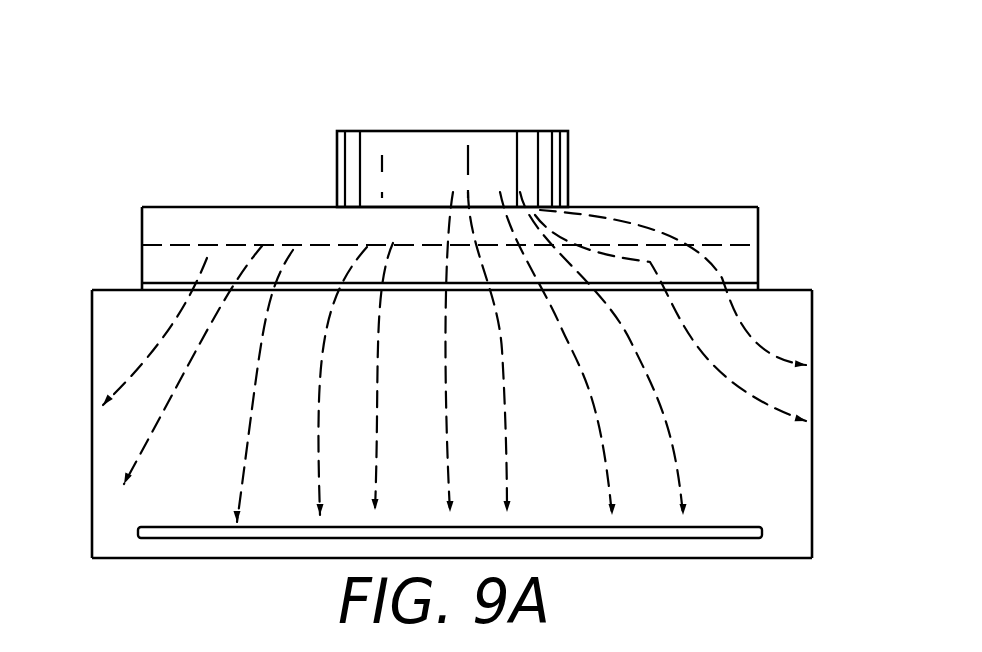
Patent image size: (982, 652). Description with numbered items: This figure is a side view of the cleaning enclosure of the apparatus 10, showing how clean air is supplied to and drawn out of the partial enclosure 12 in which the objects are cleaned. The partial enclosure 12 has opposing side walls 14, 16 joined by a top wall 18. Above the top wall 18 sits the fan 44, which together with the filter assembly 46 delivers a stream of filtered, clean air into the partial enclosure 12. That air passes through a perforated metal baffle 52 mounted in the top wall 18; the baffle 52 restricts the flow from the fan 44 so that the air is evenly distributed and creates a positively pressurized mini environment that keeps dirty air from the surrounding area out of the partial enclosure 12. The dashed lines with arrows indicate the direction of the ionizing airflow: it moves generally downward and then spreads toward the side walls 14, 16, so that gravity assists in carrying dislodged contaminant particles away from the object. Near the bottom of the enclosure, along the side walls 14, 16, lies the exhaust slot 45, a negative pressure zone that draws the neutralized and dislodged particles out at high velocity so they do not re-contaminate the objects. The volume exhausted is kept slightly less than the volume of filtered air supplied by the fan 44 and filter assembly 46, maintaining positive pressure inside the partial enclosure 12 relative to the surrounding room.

The apparatus 10 is at (303, 134).
The partial enclosure 12 is at (777, 277).
The side wall 14 is at (92, 373).
The side wall 16 is at (812, 345).
The top wall 18 is at (204, 292).
The fan 44 is at (568, 160).
The exhaust slot 45 is at (740, 527).
The filter assembly 46 is at (213, 206).
The perforated metal baffle 52 is at (165, 285).